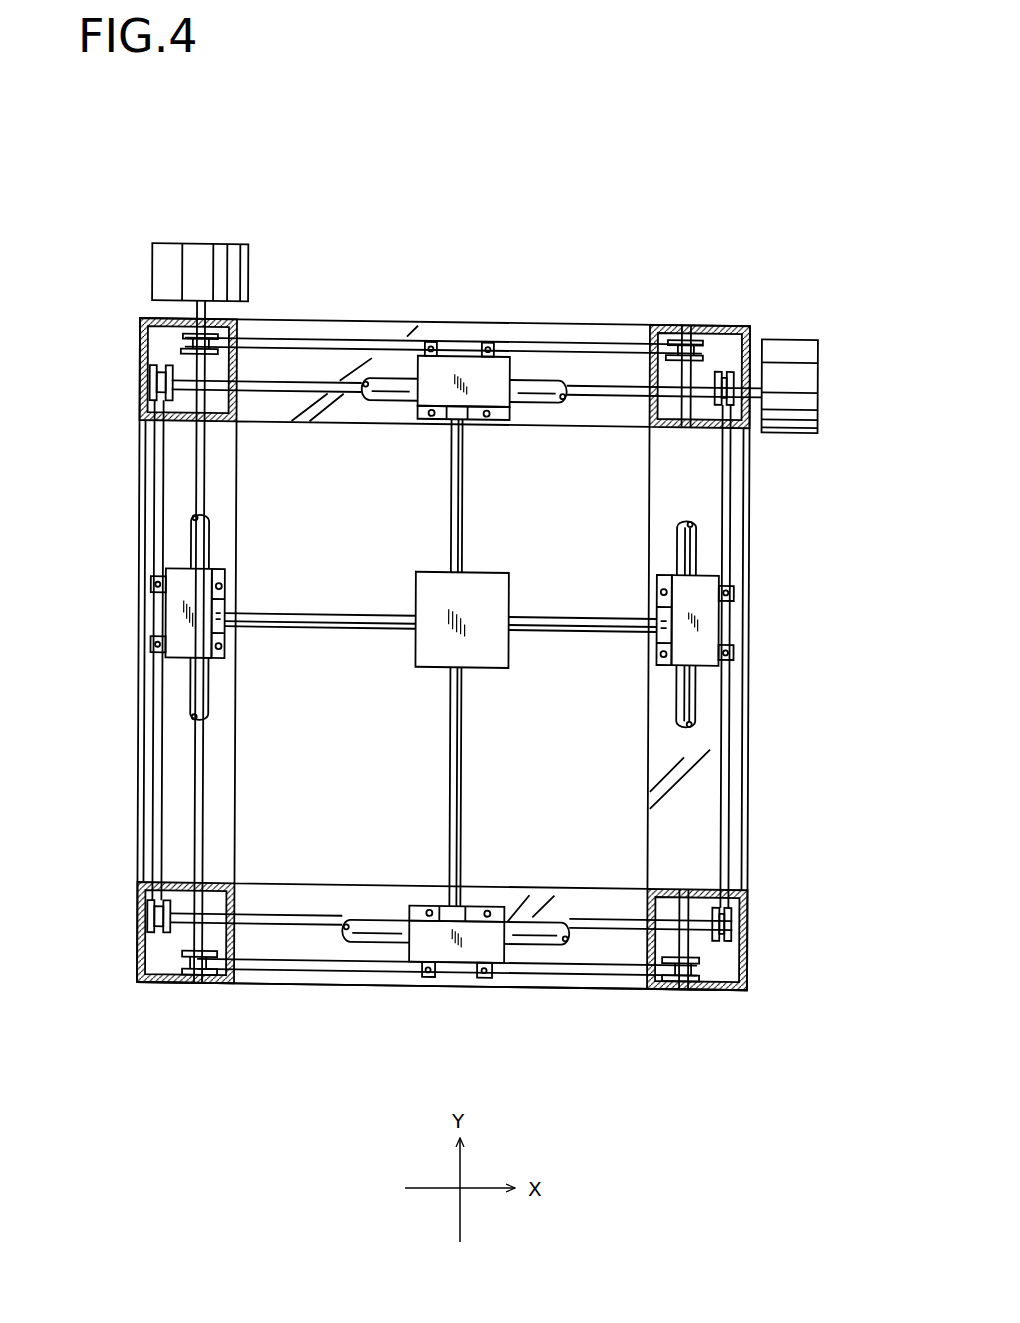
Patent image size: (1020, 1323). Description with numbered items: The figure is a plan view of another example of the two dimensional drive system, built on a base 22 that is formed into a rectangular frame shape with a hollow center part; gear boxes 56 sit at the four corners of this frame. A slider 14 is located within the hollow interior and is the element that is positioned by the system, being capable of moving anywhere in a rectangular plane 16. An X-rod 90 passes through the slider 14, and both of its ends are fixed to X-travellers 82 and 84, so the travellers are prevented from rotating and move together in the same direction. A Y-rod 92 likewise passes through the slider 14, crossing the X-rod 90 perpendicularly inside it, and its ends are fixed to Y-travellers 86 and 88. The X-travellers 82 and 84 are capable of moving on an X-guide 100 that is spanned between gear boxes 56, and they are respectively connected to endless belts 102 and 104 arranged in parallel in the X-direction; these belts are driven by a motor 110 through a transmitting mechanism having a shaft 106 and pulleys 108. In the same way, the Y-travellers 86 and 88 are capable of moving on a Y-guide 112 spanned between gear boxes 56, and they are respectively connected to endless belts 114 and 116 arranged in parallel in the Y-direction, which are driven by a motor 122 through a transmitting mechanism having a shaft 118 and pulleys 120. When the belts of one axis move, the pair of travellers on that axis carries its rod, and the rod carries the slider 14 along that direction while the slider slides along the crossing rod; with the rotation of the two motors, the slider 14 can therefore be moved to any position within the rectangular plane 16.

The slider 14 is at (430, 640).
The rectangle plane 16 is at (548, 509).
The base 22 is at (290, 983).
The gear boxes 56 is at (160, 343).
The X-traveller 82 is at (500, 365).
The X-traveller 84 is at (470, 955).
The Y-traveller 86 is at (705, 614).
The Y-traveller 88 is at (178, 622).
The X-rod 90 is at (465, 753).
The Y-rod 92 is at (330, 610).
The X-guide 100 is at (387, 380).
The endless belt 102 is at (452, 343).
The endless belt 104 is at (400, 967).
The shaft 106 is at (200, 800).
The pulleys 108 is at (160, 327).
The motor 110 is at (205, 252).
The Y-guide 112 is at (195, 690).
The endless belt 114 is at (727, 783).
The endless belt 116 is at (158, 487).
The shaft 118 is at (300, 398).
The pulleys 120 is at (150, 390).
The motor 122 is at (795, 347).